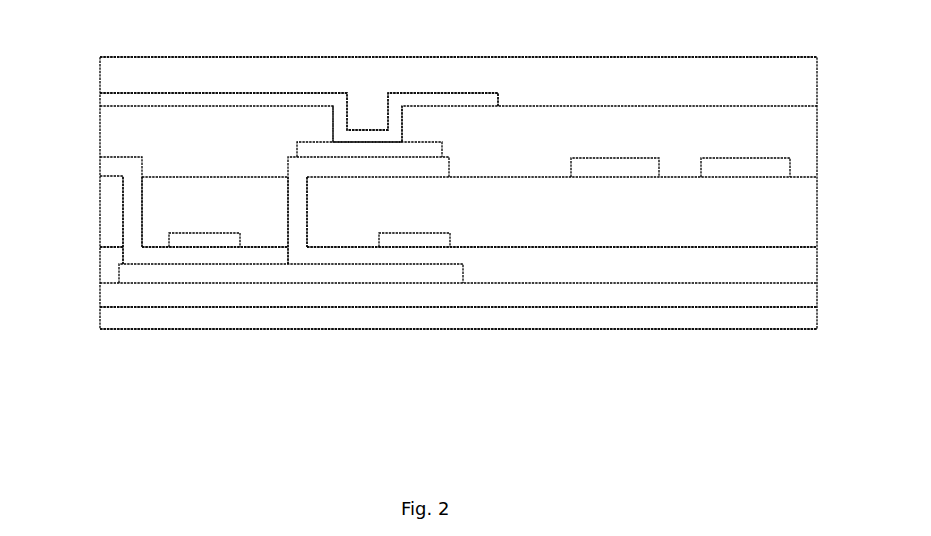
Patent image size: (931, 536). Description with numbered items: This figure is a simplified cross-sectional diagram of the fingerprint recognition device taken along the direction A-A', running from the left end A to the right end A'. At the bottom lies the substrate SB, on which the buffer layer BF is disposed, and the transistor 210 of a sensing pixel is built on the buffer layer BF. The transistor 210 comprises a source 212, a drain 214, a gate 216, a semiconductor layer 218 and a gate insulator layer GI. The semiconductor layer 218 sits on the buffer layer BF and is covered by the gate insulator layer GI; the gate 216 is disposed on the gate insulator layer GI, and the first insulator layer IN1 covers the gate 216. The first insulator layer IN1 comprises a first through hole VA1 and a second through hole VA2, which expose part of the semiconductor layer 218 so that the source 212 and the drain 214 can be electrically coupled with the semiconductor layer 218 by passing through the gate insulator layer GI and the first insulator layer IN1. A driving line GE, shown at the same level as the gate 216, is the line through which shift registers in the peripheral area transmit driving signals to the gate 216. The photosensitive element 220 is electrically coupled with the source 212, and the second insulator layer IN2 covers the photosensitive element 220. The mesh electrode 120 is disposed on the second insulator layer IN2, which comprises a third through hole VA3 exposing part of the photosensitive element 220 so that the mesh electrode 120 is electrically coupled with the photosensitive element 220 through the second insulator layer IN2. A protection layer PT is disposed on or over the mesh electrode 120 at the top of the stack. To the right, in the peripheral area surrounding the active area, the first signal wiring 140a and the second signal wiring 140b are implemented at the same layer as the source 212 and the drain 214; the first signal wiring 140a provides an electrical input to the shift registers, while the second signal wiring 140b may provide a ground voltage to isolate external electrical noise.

The mesh electrode 120 is at (412, 95).
The photosensitive element 220 is at (317, 145).
The first signal wiring 140a is at (618, 167).
The second signal wiring 140b is at (745, 167).
The transistor 210 is at (458, 282).
The source 212 is at (297, 237).
The drain 214 is at (133, 237).
The gate 216 is at (216, 238).
The semiconductor layer 218 is at (112, 363).
The driving line GE is at (412, 237).
The gate insulator layer GI is at (175, 253).
The first insulator layer IN1 is at (811, 216).
The second insulator layer IN2 is at (811, 139).
The protection layer PT is at (811, 84).
The buffer layer BF is at (811, 298).
The substrate SB is at (811, 318).
The first through hole VA1 is at (118, 202).
The second through hole VA2 is at (321, 205).
The third through hole VA3 is at (414, 127).
The section direction endpoint A is at (89, 346).
The section direction endpoint A' is at (827, 346).